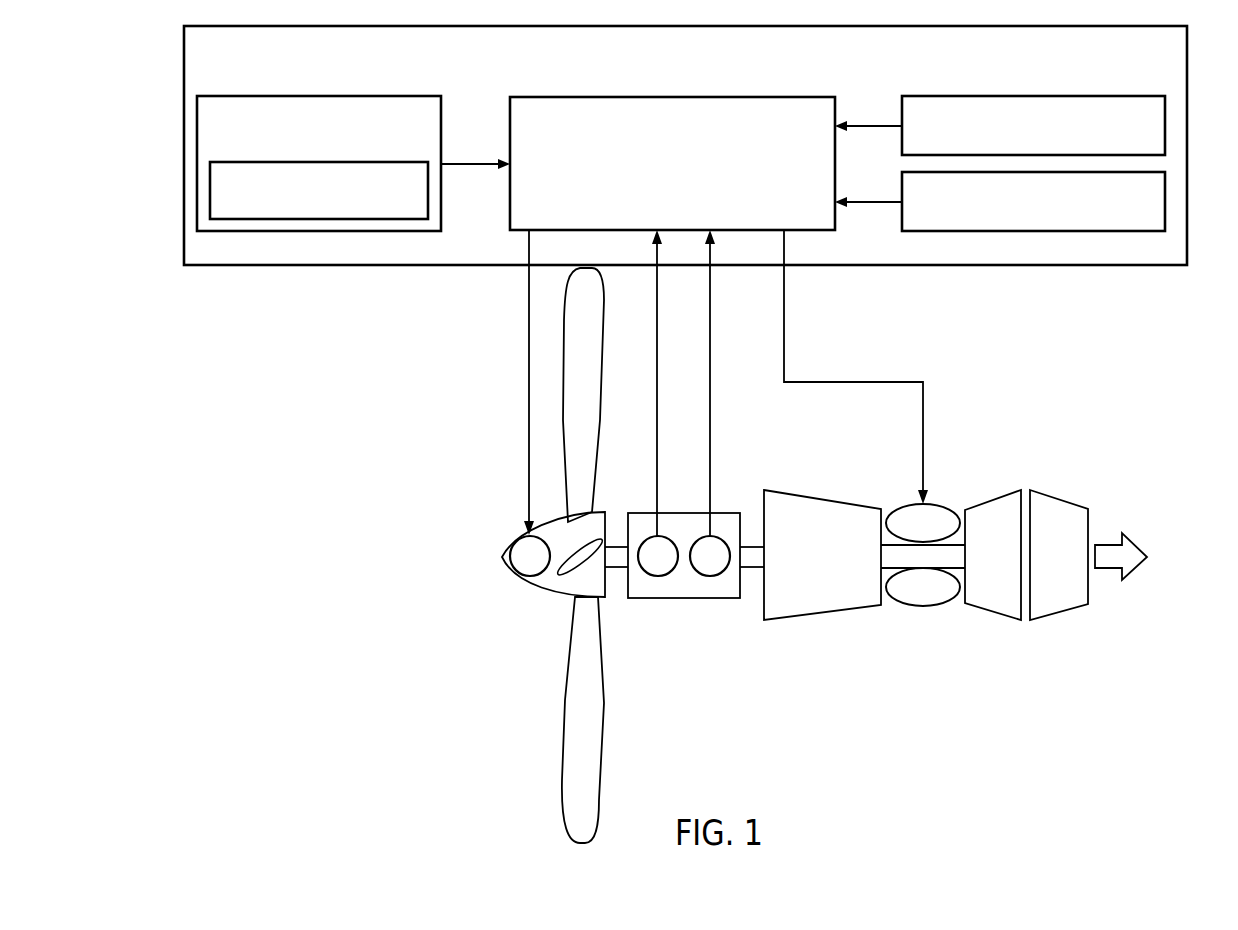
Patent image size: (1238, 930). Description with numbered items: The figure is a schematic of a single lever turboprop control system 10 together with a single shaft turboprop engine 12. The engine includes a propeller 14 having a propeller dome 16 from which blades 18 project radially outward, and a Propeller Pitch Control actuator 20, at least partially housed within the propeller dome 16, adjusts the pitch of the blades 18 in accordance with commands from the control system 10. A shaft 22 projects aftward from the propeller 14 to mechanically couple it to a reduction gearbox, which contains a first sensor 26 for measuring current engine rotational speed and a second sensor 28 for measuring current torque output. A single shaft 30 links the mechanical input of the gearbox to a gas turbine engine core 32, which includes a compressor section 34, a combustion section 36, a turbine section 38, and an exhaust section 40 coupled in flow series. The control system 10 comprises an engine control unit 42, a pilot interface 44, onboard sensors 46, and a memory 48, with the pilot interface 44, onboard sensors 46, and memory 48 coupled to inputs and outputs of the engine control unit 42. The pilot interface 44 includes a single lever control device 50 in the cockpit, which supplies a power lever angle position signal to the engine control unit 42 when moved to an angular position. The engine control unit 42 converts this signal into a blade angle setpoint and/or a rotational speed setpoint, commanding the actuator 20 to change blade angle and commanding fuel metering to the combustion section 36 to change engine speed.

The single lever turboprop control system 10 is at (184, 160).
The single shaft turboprop engine 12 is at (452, 508).
The propeller 14 is at (558, 768).
The propeller dome 16 is at (537, 592).
The blades 18 is at (568, 404).
The propeller pitch control actuator 20 is at (510, 556).
The shaft 22 is at (620, 545).
The first sensor 26 is at (660, 578).
The second sensor 28 is at (712, 578).
The single shaft 30 is at (752, 545).
The gas turbine engine core 32 is at (955, 602).
The compressor section 34 is at (808, 570).
The combustion section 36 is at (909, 535).
The turbine section 38 is at (980, 570).
The exhaust section 40 is at (1046, 570).
The engine control unit 42 is at (510, 192).
The pilot interface 44 is at (315, 96).
The onboard sensors 46 is at (1044, 96).
The memory 48 is at (1165, 200).
The single lever control device 50 is at (397, 162).